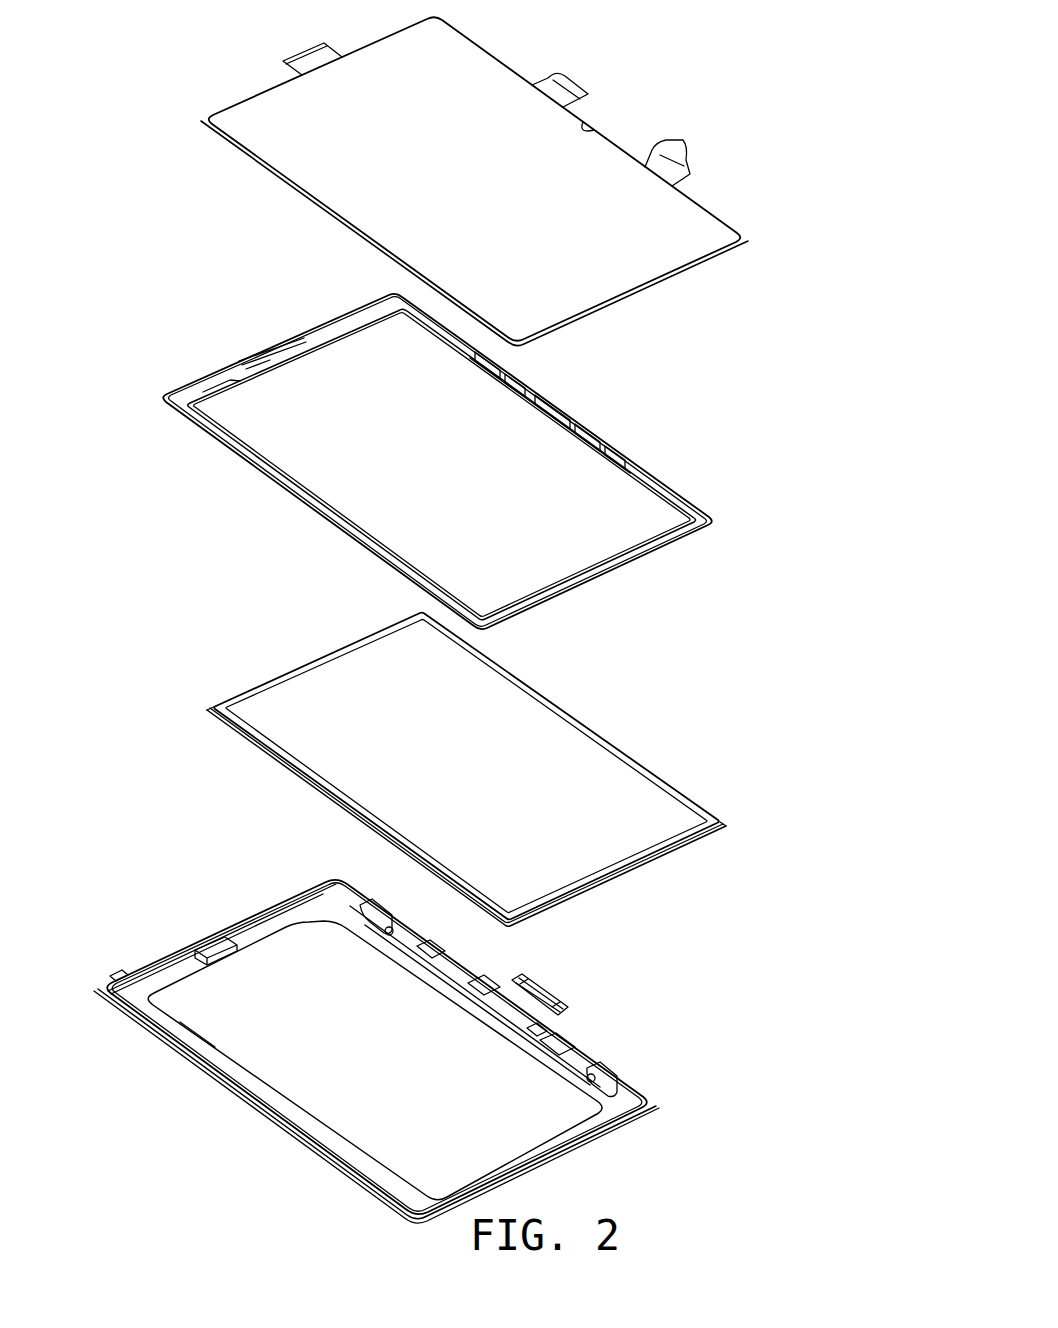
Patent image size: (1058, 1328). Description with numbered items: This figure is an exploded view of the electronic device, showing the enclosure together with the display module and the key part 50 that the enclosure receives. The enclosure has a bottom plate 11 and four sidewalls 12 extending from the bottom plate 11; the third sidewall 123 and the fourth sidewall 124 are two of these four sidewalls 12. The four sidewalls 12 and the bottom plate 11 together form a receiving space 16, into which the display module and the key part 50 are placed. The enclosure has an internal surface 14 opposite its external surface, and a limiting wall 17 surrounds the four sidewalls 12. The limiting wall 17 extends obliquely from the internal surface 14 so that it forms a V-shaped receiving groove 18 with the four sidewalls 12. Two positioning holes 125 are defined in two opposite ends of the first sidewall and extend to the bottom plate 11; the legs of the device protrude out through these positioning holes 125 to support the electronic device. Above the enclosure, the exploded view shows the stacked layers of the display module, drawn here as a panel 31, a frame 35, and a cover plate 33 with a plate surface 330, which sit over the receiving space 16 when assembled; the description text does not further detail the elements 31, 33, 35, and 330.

The bottom plate 11 is at (363, 1137).
The sidewalls 12 is at (253, 1103).
The internal surface 14 is at (293, 915).
The receiving space 16 is at (217, 1043).
The limiting wall 17 is at (173, 948).
The V-shaped receiving groove 18 is at (152, 957).
The display panel 31 is at (598, 775).
The cover plate 33 is at (674, 222).
The middle frame 35 is at (632, 475).
The key part 50 is at (557, 998).
The third sidewall 123 is at (603, 1117).
The fourth sidewall 124 is at (117, 980).
The positioning holes 125 is at (368, 930).
The plate surface 330 is at (477, 80).